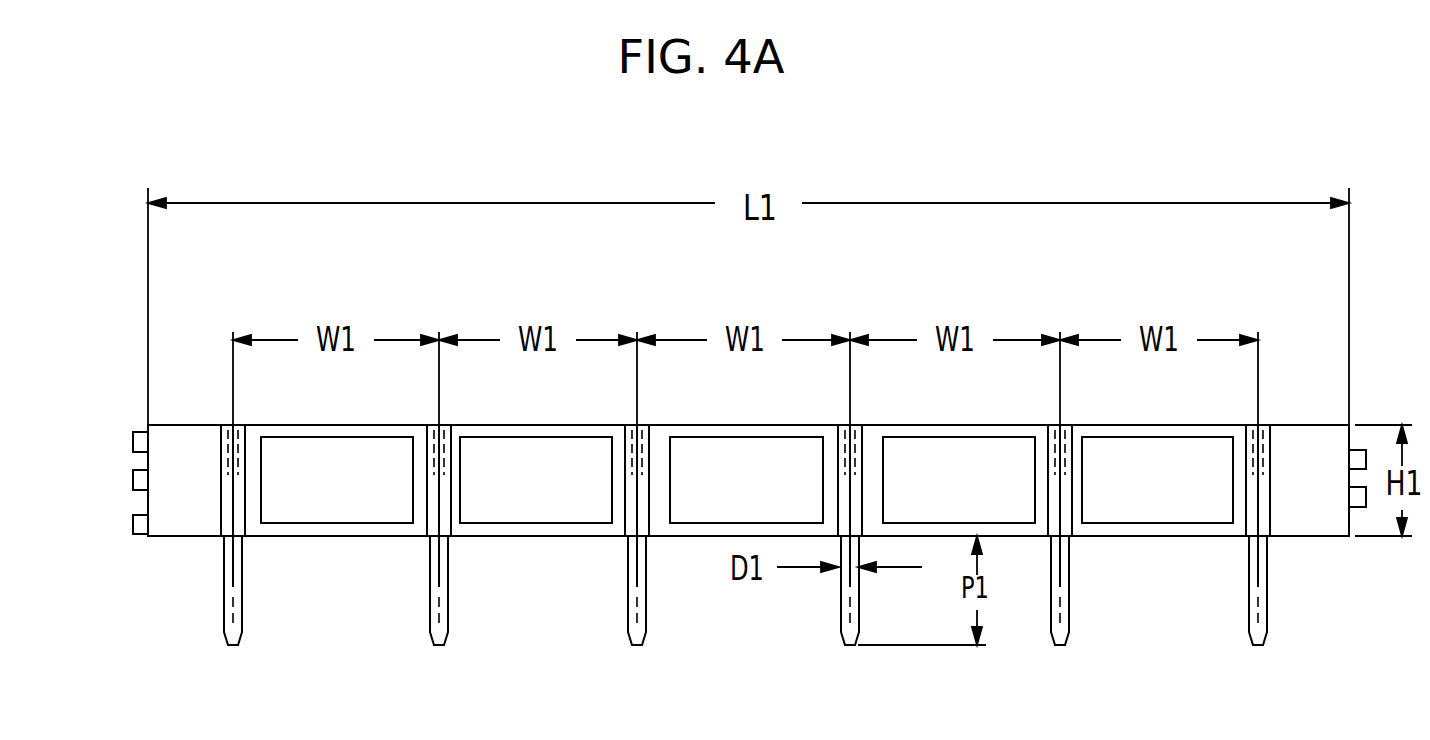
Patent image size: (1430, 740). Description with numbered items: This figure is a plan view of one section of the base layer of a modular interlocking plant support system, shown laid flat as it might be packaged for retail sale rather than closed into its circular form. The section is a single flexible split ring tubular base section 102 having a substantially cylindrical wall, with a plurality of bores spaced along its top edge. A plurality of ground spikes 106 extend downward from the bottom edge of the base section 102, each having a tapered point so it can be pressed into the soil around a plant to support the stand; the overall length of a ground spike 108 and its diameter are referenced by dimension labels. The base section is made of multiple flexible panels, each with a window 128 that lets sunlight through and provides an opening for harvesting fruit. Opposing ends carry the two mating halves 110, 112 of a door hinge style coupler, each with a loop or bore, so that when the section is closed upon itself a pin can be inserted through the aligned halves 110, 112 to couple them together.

The tubular base section 102 is at (193, 538).
The ground spikes 106 is at (239, 558).
The ground spike 108 is at (433, 635).
The first hinge style coupler half 110 is at (140, 524).
The second hinge style coupler half 112 is at (1356, 458).
The window 128 is at (1186, 497).